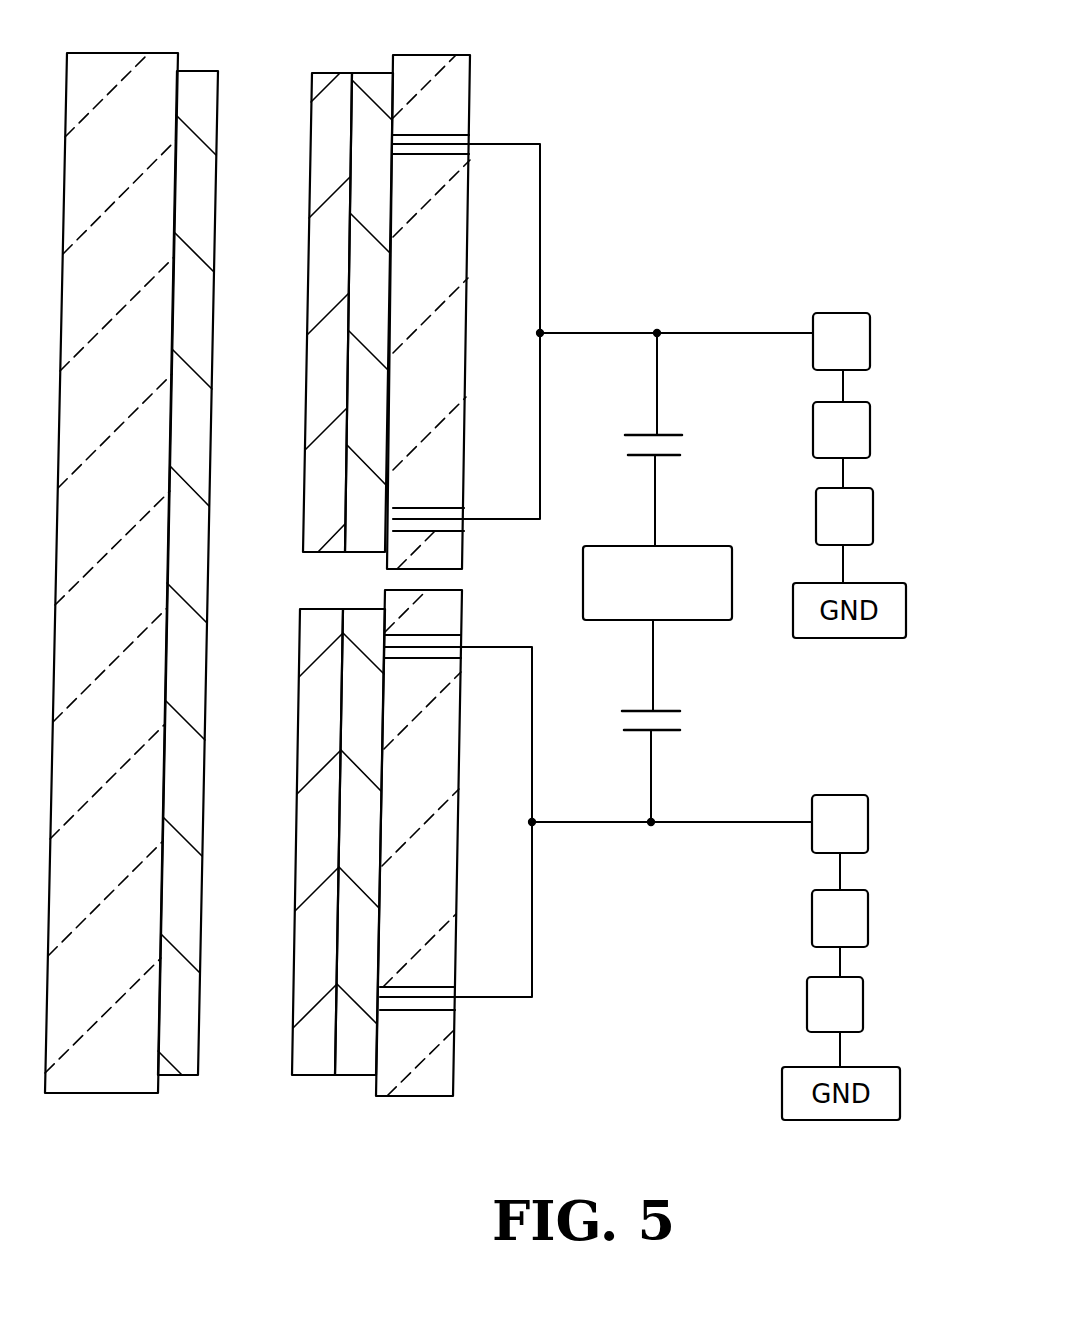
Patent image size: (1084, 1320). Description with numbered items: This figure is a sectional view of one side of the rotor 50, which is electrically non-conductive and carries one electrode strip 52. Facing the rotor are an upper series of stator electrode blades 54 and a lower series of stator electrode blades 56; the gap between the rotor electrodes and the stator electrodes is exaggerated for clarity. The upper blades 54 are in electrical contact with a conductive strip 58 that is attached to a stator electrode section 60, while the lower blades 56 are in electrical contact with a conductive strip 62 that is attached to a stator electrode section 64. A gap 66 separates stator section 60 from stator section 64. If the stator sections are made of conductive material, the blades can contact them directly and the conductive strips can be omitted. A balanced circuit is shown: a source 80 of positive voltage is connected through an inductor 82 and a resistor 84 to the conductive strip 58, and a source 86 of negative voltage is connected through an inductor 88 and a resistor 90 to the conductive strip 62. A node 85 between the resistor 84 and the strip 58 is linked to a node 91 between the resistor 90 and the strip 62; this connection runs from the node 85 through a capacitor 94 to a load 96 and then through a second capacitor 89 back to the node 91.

The rotor 50 is at (115, 52).
The electrode strip 52 is at (210, 71).
The upper series of stator electrode blades 54 is at (333, 73).
The lower series of stator electrode blades 56 is at (302, 1078).
The conductive strip 58 is at (375, 73).
The stator electrode section 60 is at (433, 55).
The conductive strip 62 is at (348, 1078).
The stator electrode section 64 is at (415, 1098).
The gap 66 is at (437, 580).
The source of positive voltage 80 is at (858, 488).
The inductor 82 is at (870, 415).
The resistor 84 is at (843, 312).
The node 85 is at (658, 333).
The source of negative voltage 86 is at (803, 1000).
The inductor 88 is at (812, 920).
The capacitor 89 is at (660, 708).
The resistor 90 is at (848, 795).
The node 91 is at (650, 825).
The capacitor 94 is at (668, 433).
The load 96 is at (682, 546).